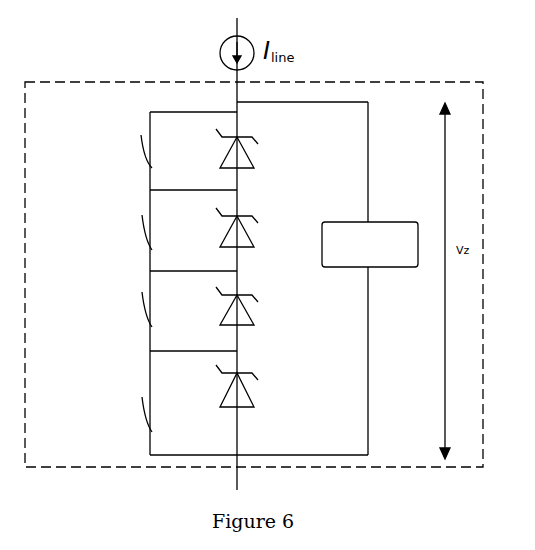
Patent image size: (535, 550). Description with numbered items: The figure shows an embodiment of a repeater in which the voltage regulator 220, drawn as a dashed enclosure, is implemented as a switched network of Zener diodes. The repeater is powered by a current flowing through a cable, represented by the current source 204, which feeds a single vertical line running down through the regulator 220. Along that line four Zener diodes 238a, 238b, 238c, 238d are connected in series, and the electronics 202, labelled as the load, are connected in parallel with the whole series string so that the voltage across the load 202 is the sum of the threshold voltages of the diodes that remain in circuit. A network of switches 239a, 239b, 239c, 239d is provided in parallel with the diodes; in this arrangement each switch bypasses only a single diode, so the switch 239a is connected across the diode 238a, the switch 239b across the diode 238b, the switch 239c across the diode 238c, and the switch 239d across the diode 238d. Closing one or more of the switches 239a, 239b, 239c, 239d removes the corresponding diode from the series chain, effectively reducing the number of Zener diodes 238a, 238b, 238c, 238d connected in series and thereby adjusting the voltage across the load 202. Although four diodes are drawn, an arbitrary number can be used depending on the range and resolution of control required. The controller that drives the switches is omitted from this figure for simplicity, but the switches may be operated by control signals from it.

The voltage regulator 220 is at (128, 81).
The current source 204 is at (221, 50).
The electronics 202 is at (386, 221).
The Zener diode 238a is at (247, 156).
The Zener diode 238b is at (248, 233).
The Zener diode 238c is at (248, 309).
The Zener diode 238d is at (247, 392).
The switch 239a is at (143, 148).
The switch 239b is at (146, 232).
The switch 239c is at (145, 308).
The switch 239d is at (145, 415).